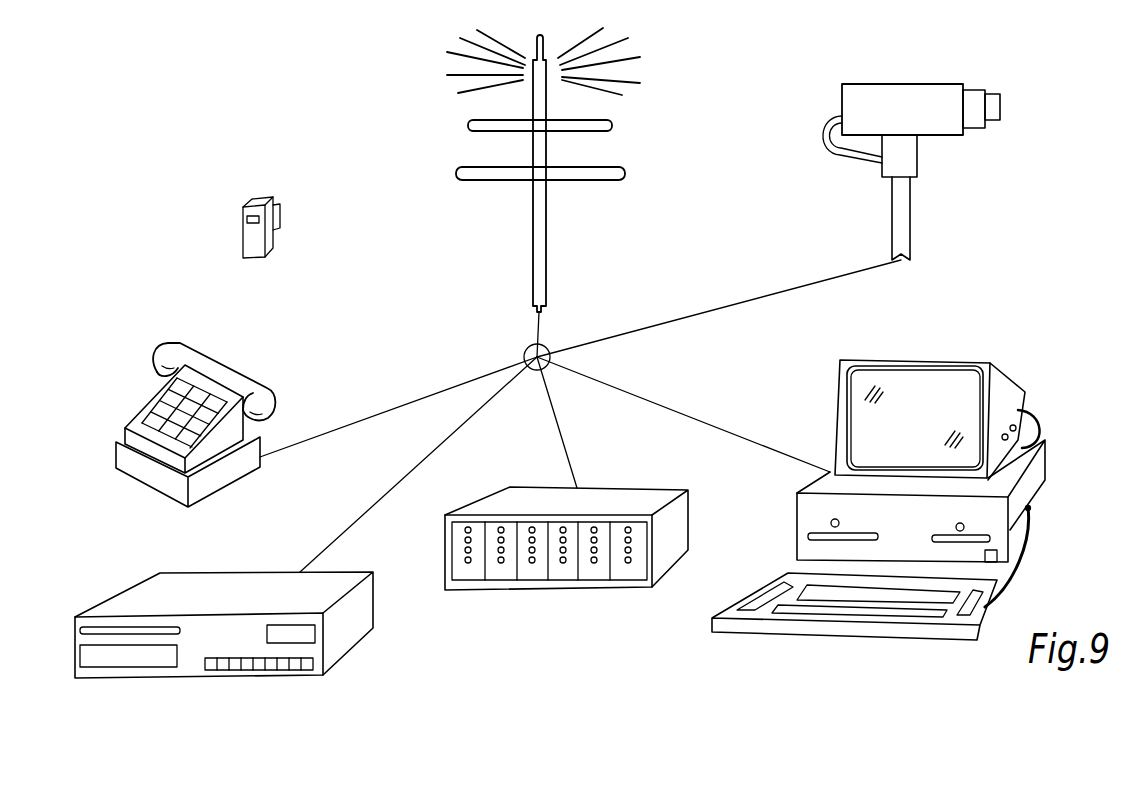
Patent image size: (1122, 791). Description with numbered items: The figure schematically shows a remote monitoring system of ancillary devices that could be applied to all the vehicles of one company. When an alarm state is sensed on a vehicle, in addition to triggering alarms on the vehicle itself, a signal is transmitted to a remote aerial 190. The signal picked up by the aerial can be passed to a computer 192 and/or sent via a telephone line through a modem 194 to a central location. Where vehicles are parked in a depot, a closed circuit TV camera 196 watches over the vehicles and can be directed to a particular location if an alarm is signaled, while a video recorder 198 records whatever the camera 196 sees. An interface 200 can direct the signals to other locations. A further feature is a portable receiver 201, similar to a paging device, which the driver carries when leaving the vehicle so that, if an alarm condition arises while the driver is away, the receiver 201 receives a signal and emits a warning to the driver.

The remote aerial 190 is at (546, 233).
The computer 192 is at (1003, 402).
The modem 194 is at (263, 447).
The closed circuit TV camera 196 is at (918, 158).
The video recorder 198 is at (350, 632).
The interface 200 is at (668, 557).
The portable receiver 201 is at (270, 202).